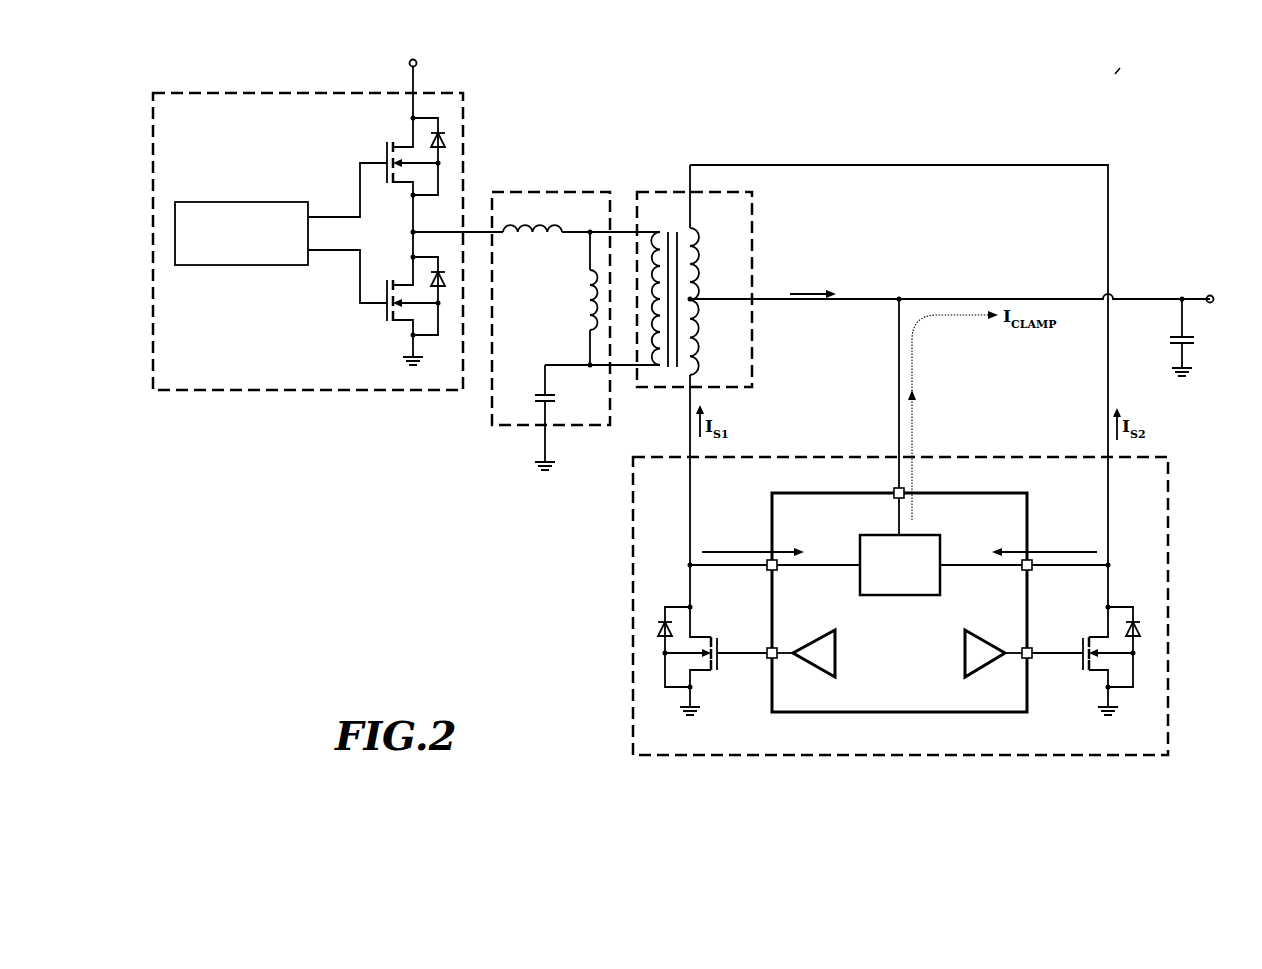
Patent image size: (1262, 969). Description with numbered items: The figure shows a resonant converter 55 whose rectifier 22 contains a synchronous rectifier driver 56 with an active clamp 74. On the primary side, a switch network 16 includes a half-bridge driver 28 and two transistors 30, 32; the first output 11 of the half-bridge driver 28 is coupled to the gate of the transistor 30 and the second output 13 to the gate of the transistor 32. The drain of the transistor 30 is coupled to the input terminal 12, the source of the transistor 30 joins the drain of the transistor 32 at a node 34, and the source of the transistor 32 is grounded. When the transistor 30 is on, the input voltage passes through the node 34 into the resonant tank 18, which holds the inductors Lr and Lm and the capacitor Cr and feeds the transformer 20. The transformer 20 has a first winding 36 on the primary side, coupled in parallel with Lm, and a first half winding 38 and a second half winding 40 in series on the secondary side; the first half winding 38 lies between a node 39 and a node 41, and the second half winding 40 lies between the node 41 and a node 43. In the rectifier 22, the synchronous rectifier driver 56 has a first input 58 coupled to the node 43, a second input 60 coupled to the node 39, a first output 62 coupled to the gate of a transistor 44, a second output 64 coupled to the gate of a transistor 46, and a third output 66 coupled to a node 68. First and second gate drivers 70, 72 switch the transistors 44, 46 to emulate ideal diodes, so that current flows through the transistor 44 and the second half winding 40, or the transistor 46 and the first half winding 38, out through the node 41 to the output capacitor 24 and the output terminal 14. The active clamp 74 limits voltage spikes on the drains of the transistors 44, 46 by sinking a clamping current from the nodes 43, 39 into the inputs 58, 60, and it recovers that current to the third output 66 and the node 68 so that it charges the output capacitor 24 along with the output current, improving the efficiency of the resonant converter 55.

The first output 11 is at (320, 217).
The input terminal 12 is at (409, 64).
The second output 13 is at (320, 250).
The output terminal 14 is at (1212, 303).
The switch network 16 is at (196, 93).
The resonant tank 18 is at (534, 192).
The transformer 20 is at (666, 192).
The rectifier 22 is at (633, 708).
The output capacitor 24 is at (1170, 342).
The half-bridge driver 28 is at (211, 202).
The transistor 30 is at (386, 150).
The transistor 32 is at (386, 314).
The node 34 is at (411, 232).
The first winding 36 is at (655, 233).
The first half winding 38 is at (697, 254).
The node 39 is at (1110, 565).
The second half winding 40 is at (697, 350).
The node 41 is at (693, 299).
The node 43 is at (688, 565).
The transistor 44 is at (719, 666).
The transistor 46 is at (1081, 666).
The resonant converter 55 is at (1118, 70).
The synchronous rectifier driver 56 is at (811, 712).
The first input 58 is at (770, 571).
The second input 60 is at (1030, 571).
The first output 62 is at (770, 648).
The second output 64 is at (1030, 648).
The third output 66 is at (893, 489).
The node 68 is at (901, 297).
The first gate driver 70 is at (822, 672).
The second gate driver 72 is at (976, 672).
The active clamp 74 is at (858, 552).